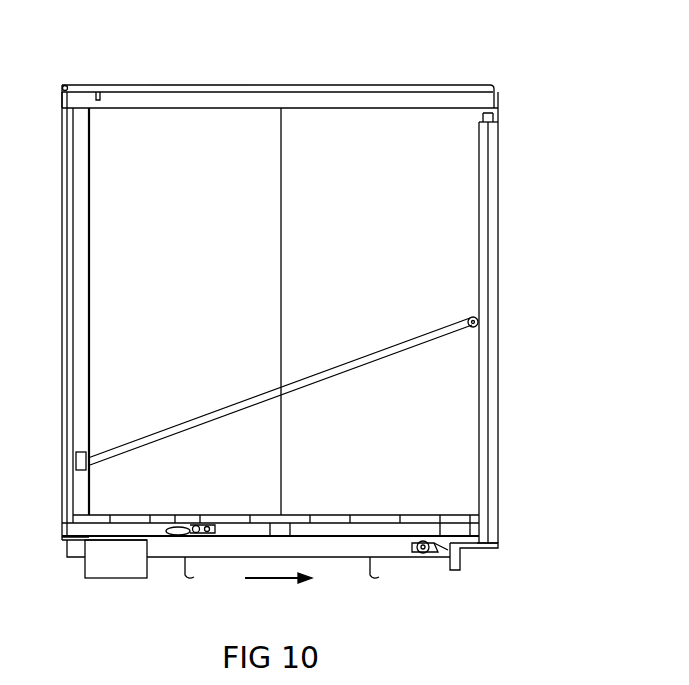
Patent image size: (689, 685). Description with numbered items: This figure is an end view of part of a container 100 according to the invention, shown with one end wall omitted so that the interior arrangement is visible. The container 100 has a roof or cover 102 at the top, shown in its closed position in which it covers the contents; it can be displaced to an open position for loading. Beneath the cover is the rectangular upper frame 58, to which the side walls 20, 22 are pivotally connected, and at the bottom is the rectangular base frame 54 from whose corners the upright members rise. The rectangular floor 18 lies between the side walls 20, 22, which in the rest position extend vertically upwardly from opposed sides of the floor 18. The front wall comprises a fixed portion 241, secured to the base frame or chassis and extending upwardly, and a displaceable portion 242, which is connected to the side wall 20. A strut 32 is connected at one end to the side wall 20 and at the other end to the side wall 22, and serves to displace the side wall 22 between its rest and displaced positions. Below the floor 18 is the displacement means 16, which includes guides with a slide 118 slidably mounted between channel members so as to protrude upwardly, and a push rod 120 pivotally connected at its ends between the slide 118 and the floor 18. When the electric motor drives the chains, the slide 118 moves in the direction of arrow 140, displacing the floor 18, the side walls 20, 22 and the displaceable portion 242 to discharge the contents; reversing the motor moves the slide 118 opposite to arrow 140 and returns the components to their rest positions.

The container 100 is at (94, 42).
The roof or cover 102 is at (401, 84).
The upper frame 58 is at (201, 72).
The displaceable portion 242 is at (222, 118).
The fixed portion 241 is at (452, 178).
The side wall 22 is at (478, 217).
The side wall 20 is at (91, 291).
The strut 32 is at (228, 404).
The floor 18 is at (322, 515).
The displacement means 16 is at (185, 612).
The base frame 54 is at (495, 548).
The slide 118 is at (176, 527).
The push rod 120 is at (200, 528).
The arrow 140 is at (258, 580).